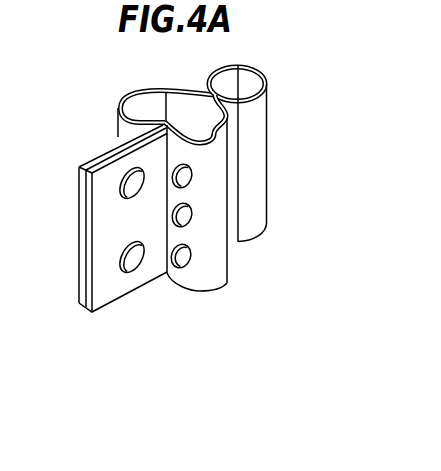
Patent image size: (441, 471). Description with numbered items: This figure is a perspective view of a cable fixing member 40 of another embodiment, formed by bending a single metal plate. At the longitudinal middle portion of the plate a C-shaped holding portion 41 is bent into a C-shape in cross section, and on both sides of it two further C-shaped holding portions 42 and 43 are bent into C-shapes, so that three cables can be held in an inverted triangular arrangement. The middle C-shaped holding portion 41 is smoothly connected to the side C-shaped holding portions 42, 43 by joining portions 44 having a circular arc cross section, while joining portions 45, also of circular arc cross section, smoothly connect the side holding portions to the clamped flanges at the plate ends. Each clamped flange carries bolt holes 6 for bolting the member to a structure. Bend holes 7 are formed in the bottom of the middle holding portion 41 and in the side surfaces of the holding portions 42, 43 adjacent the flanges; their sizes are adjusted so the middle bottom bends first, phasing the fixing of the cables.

The cable fixing member 40 is at (106, 74).
The C-shaped holding portion 41 is at (259, 73).
The C-shaped holding portion 42 is at (121, 92).
The C-shaped holding portion 43 is at (229, 135).
The joining portion 44 is at (207, 90).
The joining portion 45 is at (160, 122).
The bolt hole 6 is at (138, 269).
The bend hole 7 is at (187, 271).